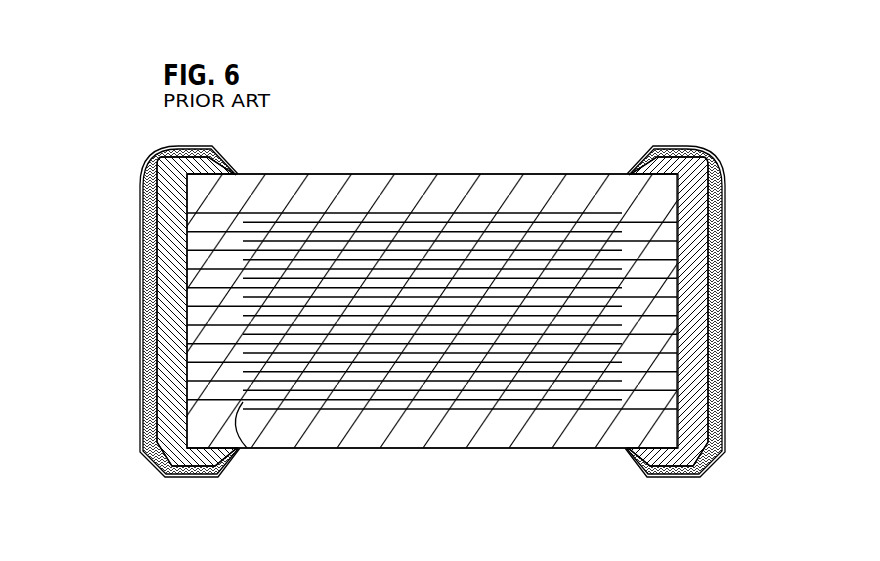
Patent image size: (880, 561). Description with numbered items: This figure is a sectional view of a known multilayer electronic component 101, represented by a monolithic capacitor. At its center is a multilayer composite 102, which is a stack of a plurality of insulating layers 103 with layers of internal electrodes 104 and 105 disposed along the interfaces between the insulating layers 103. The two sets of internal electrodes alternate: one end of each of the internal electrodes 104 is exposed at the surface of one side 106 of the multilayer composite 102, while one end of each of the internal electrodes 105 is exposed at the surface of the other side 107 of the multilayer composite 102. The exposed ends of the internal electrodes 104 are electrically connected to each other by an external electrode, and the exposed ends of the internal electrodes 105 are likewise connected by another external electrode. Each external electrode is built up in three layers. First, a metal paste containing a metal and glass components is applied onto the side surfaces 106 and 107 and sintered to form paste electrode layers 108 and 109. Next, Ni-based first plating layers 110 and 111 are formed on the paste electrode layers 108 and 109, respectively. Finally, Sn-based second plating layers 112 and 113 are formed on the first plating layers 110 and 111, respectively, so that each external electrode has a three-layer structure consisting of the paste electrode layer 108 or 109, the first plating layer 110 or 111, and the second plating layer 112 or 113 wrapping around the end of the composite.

The multilayer electronic component 101 is at (412, 160).
The multilayer composite 102 is at (548, 174).
The insulating layers 103 is at (660, 188).
The internal electrodes 104 is at (245, 458).
The internal electrodes 105 is at (548, 413).
The one side 106 is at (188, 351).
The other side 107 is at (676, 359).
The paste electrode layer 108 is at (141, 246).
The paste electrode layer 109 is at (690, 230).
The first plating layer 110 is at (143, 290).
The first plating layer 111 is at (716, 287).
The second plating layer 112 is at (140, 322).
The second plating layer 113 is at (722, 330).